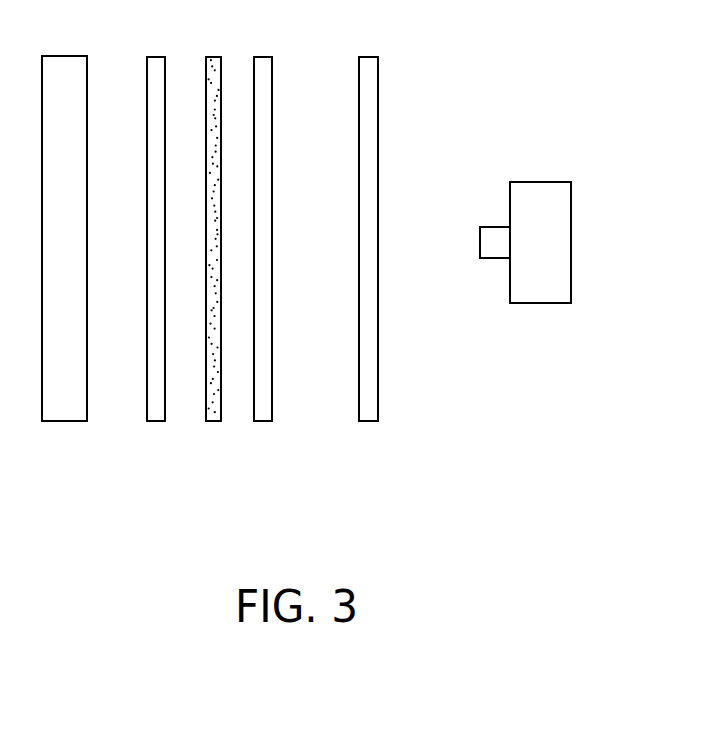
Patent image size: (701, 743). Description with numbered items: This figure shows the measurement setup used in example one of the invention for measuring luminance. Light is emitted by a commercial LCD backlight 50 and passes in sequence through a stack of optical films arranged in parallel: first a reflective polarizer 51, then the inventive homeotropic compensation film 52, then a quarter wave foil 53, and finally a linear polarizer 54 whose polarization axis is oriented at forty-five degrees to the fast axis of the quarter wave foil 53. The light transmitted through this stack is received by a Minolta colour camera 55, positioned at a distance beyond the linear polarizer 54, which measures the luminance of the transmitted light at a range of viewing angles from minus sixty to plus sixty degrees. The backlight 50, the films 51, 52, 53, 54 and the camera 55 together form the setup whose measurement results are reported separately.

The LCD backlight 50 is at (64, 292).
The reflective polarizer 51 is at (158, 293).
The homeotropic compensation film 52 is at (214, 293).
The quarter wave foil 53 is at (267, 293).
The linear polarizer 54 is at (371, 293).
The colour camera 55 is at (525, 356).